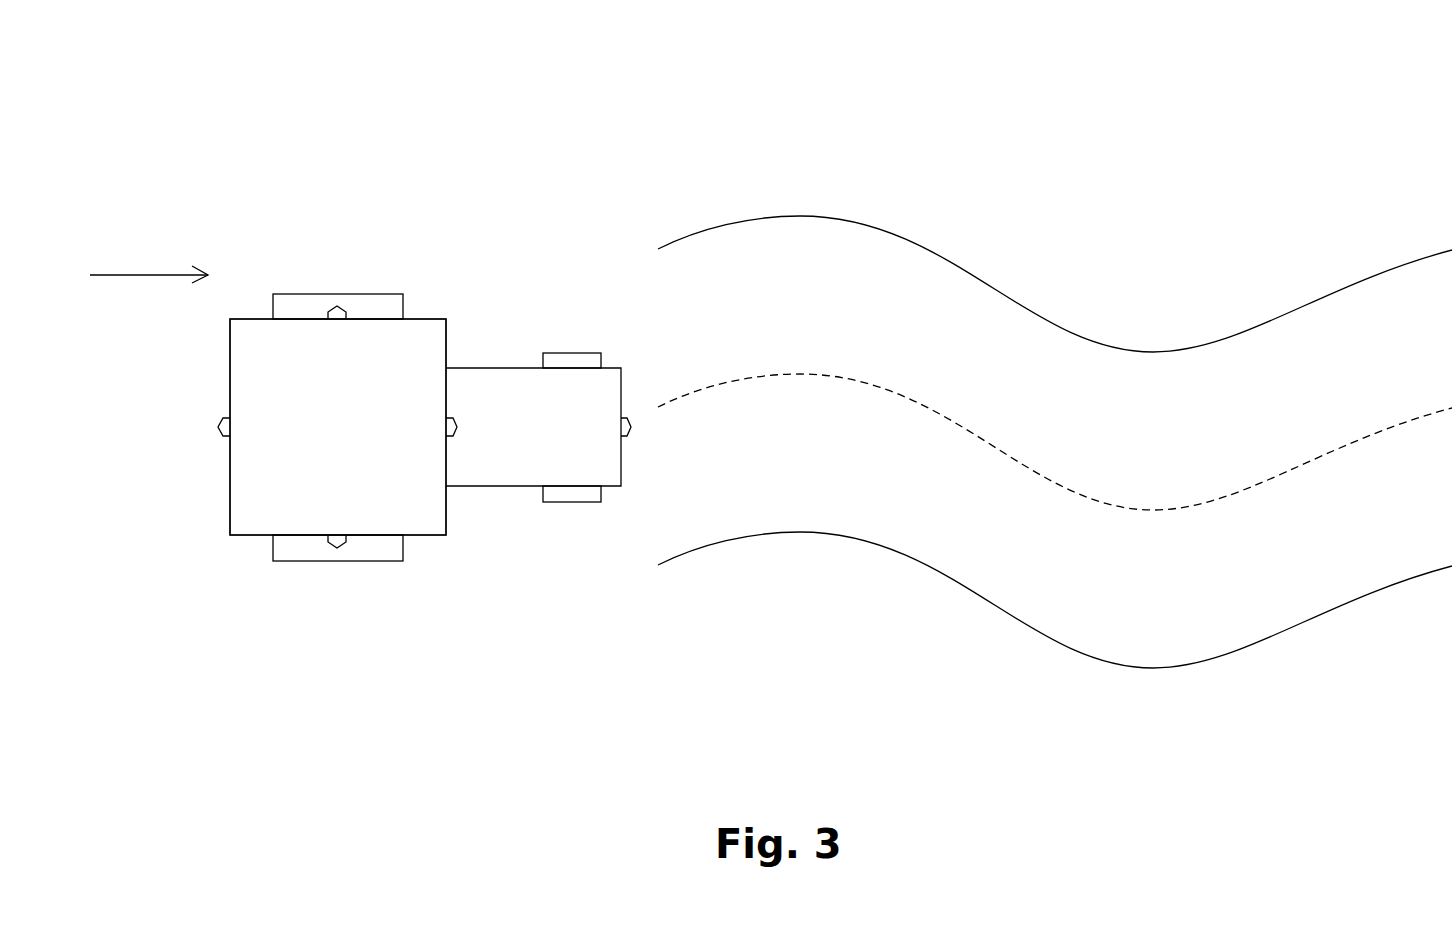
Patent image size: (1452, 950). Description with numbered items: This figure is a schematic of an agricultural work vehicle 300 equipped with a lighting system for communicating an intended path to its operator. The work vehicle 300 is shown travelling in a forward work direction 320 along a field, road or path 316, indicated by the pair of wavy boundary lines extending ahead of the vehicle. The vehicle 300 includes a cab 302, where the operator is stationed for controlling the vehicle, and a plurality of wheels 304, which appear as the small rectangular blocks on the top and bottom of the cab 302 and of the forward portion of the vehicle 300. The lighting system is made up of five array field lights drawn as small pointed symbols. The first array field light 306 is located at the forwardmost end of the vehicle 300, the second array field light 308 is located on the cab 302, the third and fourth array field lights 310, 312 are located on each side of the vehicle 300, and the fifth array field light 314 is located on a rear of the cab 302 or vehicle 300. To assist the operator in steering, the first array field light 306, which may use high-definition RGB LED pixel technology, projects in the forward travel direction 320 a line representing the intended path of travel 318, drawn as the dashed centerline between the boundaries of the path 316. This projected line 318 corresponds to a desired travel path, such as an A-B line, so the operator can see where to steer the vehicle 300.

The work vehicle 300 is at (319, 150).
The cab 302 is at (248, 375).
The wheels 304 is at (287, 294).
The first array field light 306 is at (625, 418).
The second array field light 308 is at (457, 432).
The third array field light 310 is at (343, 310).
The fourth array field light 312 is at (337, 550).
The fifth array field light 314 is at (220, 440).
The path 316 is at (1153, 350).
The intended path of travel 318 is at (800, 374).
The forward work direction 320 is at (147, 275).